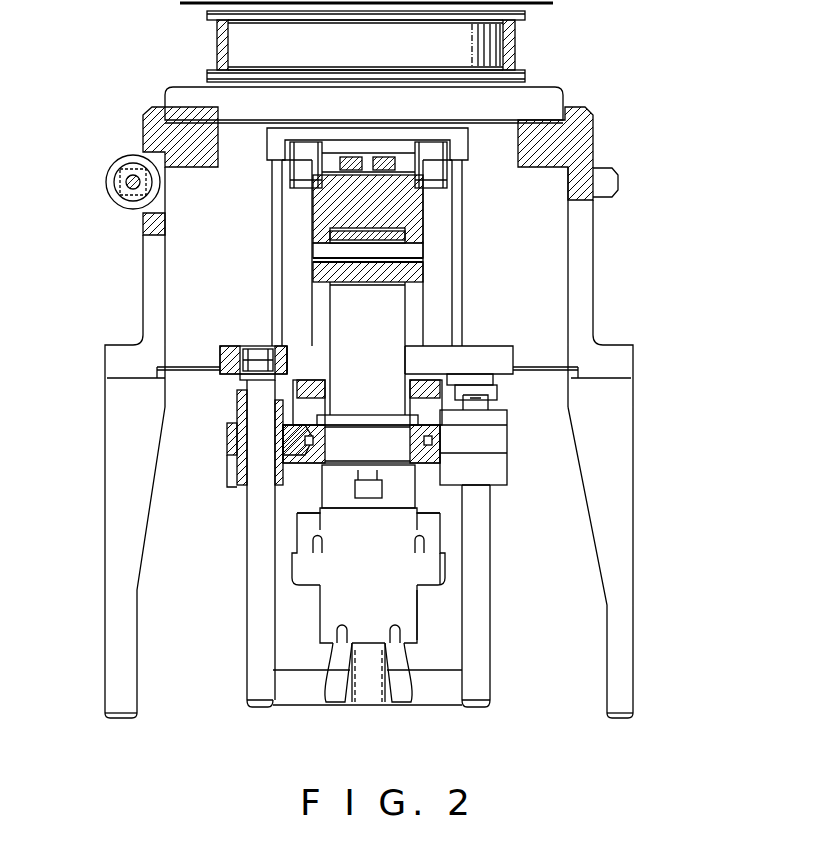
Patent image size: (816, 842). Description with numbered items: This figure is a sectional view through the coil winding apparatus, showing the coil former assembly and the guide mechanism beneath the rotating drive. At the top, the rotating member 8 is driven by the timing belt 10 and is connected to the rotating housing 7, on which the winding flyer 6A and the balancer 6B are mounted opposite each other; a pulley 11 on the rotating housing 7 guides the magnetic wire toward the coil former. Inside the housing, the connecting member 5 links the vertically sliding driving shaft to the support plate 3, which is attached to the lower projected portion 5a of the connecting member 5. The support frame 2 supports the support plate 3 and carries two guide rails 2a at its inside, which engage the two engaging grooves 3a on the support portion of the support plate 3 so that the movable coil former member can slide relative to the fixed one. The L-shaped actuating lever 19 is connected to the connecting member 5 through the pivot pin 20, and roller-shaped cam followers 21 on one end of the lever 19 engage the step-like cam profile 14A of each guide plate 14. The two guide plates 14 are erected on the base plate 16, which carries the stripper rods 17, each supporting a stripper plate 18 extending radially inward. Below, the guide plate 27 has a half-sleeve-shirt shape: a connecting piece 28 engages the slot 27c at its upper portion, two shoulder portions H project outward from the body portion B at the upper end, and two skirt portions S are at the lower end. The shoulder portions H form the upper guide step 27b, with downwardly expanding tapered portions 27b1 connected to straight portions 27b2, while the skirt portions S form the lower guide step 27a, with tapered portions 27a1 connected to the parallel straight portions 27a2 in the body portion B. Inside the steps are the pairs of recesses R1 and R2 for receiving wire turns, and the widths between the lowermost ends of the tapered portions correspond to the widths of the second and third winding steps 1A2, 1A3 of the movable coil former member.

The timing belt 10 is at (516, 46).
The rotating member 8 is at (180, 98).
The rotating housing 7 is at (160, 116).
The pulley 11 is at (118, 170).
The cam follower 21 is at (293, 185).
The actuating lever 19 is at (410, 220).
The pivot pin 20 is at (317, 250).
The connecting member 5 is at (395, 300).
The lower projected portion 5a is at (325, 412).
The guide plate 14 is at (278, 300).
The cam profile 14A is at (292, 275).
The base plate 16 is at (513, 360).
The stripper rod 17 is at (262, 690).
The guide rail 2a is at (284, 430).
The support plate 3 is at (418, 430).
The engaging groove 3a is at (313, 446).
The support frame 2 is at (505, 455).
The body portion B is at (391, 490).
The guide plate 27 is at (304, 612).
The slot 27c is at (358, 508).
The connecting piece 28 is at (378, 498).
The upper guide step 27b is at (303, 545).
The tapered portion 27b1 is at (363, 556).
The straight portion 27b2 is at (504, 517).
The lower guide step 27a is at (304, 633).
The tapered portion 27a1 is at (364, 648).
The straight portion 27a2 is at (506, 611).
The recess R1 is at (320, 548).
The recess R2 is at (392, 680).
The skirt portion S is at (340, 628).
The shoulder portion H is at (306, 515).
The third winding step 1A3 is at (448, 560).
The second winding step 1A2 is at (420, 624).
The stripper plate 18 is at (295, 700).
The winding flyer 6A is at (118, 412).
The balancer 6B is at (622, 413).